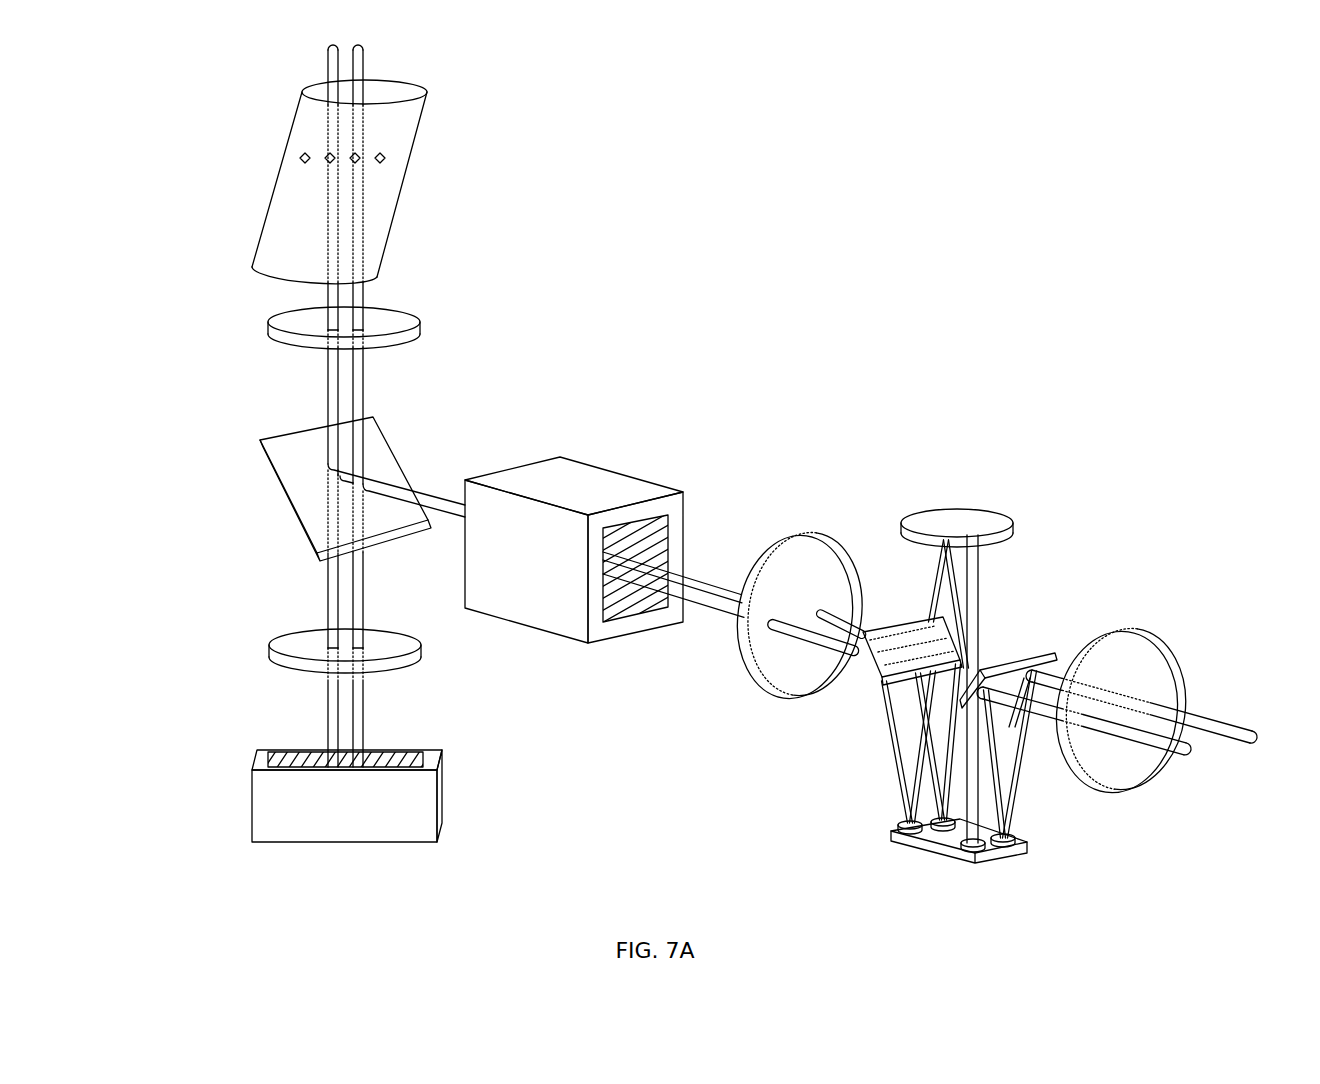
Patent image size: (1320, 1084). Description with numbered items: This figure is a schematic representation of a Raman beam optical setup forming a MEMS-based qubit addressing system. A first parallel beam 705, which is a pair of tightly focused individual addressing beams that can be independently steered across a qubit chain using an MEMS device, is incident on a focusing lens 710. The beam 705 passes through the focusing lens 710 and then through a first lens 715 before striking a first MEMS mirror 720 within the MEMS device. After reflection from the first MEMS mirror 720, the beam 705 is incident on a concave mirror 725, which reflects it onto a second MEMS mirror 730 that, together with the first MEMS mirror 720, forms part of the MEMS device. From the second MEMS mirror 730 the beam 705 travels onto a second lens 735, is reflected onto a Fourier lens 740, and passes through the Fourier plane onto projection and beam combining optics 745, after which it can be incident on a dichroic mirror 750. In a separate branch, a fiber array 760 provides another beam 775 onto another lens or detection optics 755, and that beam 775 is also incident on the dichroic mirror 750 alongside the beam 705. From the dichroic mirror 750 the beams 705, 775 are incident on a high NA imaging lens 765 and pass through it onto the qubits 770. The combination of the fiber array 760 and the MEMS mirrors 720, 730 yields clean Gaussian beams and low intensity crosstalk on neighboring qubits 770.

The first parallel beam 705 is at (1216, 717).
The focusing lens 710 is at (1110, 632).
The first lens 715 is at (1035, 656).
The first MEMS mirror 720 is at (1000, 848).
The concave mirror 725 is at (958, 510).
The second MEMS mirror 730 is at (897, 830).
The second lens 735 is at (896, 628).
The Fourier lens 740 is at (798, 538).
The projection and beam combining optics 745 is at (619, 473).
The dichroic mirror 750 is at (283, 504).
The lens or detection optics 755 is at (269, 649).
The fiber array 760 is at (252, 796).
The high NA imaging lens 765 is at (268, 330).
The qubits 770 is at (273, 172).
The beam 775 is at (326, 63).